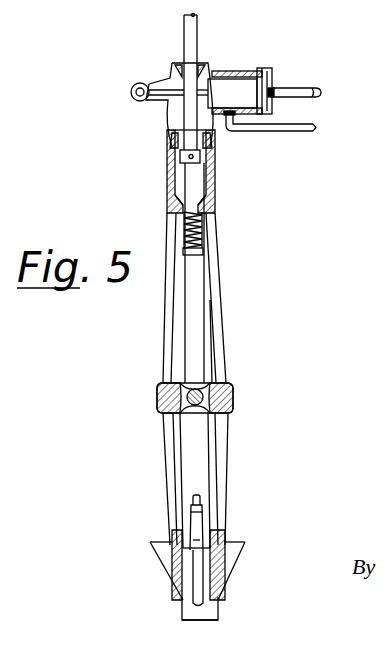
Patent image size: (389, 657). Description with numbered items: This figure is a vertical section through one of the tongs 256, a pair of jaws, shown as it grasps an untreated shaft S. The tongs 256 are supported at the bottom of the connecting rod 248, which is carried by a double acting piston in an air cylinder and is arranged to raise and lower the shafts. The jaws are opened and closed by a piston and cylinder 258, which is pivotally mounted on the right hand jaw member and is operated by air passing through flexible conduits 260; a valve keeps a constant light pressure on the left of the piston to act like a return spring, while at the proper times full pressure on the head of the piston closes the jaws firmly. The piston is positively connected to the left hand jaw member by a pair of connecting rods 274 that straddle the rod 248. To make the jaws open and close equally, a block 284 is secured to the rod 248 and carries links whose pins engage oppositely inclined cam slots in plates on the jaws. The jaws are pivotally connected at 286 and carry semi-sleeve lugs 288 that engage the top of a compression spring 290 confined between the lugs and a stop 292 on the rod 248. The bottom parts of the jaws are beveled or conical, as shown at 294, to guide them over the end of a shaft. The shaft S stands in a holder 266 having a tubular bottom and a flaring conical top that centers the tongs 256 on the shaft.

The connecting rod 248 is at (185, 30).
The piston and cylinder 258 is at (237, 92).
The flexible conduits 260 is at (318, 93).
The connecting rods 274 is at (160, 97).
The block 284 is at (200, 156).
The semi-sleeve lugs 288 is at (210, 200).
The compression spring 290 is at (195, 227).
The stop 292 is at (203, 252).
The pivotal connection 286 is at (190, 394).
The tongs 256 is at (180, 447).
The beveled bottom parts 294 is at (215, 570).
The holder 266 is at (233, 567).
The shaft S is at (202, 592).